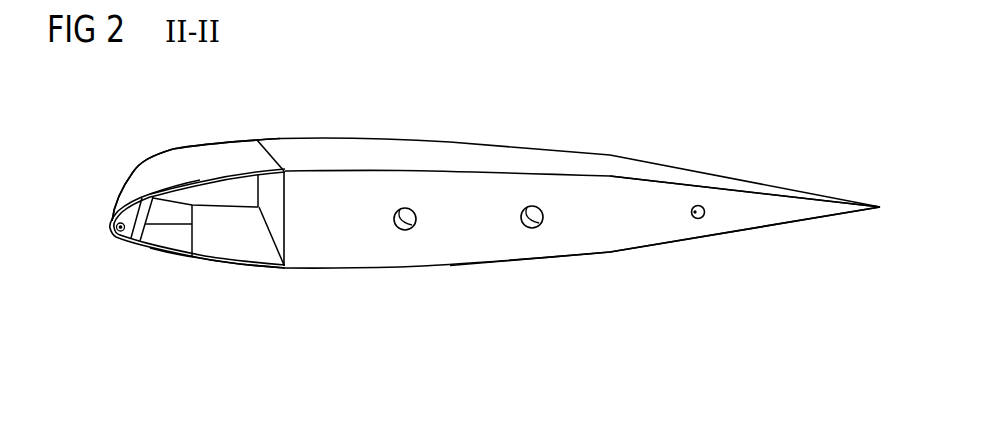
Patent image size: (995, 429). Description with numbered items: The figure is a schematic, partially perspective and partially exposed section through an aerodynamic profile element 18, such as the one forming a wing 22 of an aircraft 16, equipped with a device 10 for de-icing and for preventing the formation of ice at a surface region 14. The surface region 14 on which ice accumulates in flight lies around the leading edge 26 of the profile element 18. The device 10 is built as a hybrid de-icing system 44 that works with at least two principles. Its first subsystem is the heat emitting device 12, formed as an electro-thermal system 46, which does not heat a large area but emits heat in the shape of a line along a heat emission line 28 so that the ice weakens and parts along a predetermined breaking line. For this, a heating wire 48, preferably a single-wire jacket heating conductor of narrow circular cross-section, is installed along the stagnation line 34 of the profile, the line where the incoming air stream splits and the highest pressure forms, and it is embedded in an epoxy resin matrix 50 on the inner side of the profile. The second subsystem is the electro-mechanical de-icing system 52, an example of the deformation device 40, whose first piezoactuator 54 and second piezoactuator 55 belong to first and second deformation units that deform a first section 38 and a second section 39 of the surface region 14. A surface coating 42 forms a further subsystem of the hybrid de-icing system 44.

The device for de-icing and/or for preventing the formation of ice 10 is at (302, 119).
The heat emitting device 12 is at (123, 261).
The surface region 14 is at (228, 151).
The aircraft 16 is at (691, 117).
The profile element 18 is at (593, 270).
The wing 22 is at (667, 235).
The leading edge 26 is at (118, 188).
The heat emission line 28 is at (122, 162).
The stagnation line 34 is at (110, 215).
The first section 38 is at (197, 153).
The second section 39 is at (190, 274).
The deformation device 40 is at (171, 248).
The surface coating 42 is at (159, 162).
The hybrid de-icing system 44 is at (262, 122).
The electro-thermal system 46 is at (63, 333).
The heating wire 48 is at (117, 242).
The epoxy resin matrix 50 is at (116, 229).
The electro-mechanical de-icing system 52 is at (267, 240).
The first piezoactuator 54 is at (217, 198).
The second piezoactuator 55 is at (165, 221).